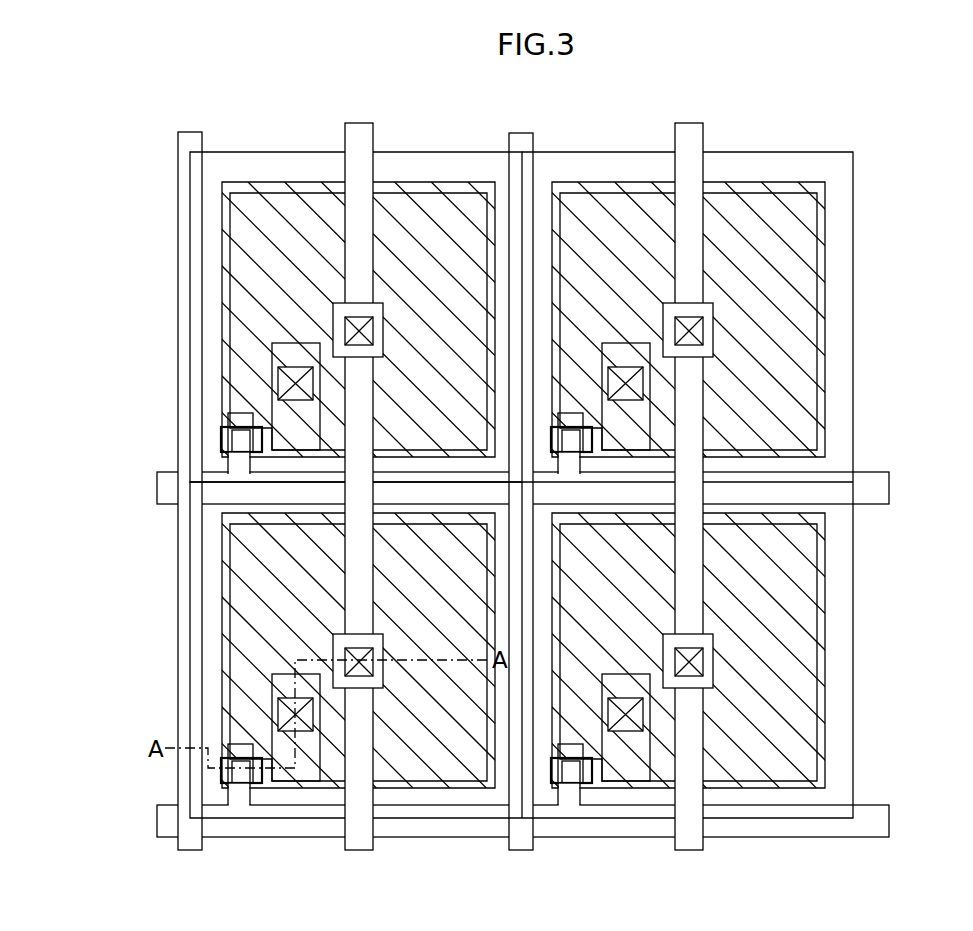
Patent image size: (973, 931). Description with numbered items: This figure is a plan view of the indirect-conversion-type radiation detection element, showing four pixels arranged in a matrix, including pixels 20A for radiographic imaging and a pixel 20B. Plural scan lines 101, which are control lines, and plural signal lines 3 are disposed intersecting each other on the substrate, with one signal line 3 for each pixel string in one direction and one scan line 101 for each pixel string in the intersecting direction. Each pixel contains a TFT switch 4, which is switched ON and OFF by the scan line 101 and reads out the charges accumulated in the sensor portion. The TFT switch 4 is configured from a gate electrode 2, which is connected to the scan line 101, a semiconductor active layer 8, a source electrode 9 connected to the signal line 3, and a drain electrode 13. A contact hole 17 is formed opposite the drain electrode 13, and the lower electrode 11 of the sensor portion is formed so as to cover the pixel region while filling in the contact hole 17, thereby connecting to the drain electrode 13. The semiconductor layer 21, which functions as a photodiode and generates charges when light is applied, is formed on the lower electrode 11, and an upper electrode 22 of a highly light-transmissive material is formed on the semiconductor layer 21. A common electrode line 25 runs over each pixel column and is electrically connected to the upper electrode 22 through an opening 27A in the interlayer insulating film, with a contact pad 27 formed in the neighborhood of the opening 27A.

The signal line 3 is at (195, 133).
The lower electrode 11 is at (232, 182).
The semiconductor layer 21 is at (371, 268).
The upper electrode 22 is at (313, 193).
The common electrode line 25 is at (376, 130).
The pixel 20B is at (432, 165).
The pixel for radiographic imaging 20A is at (763, 168).
The contact pad 27 is at (343, 298).
The opening 27A is at (333, 304).
The contact hole 17 is at (277, 378).
The drain electrode 13 is at (315, 415).
The gate electrode 2 is at (241, 414).
The semiconductor active layer 8 is at (221, 448).
The source electrode 9 is at (207, 440).
The TFT switch 4 is at (238, 455).
The scan line 101 is at (878, 485).